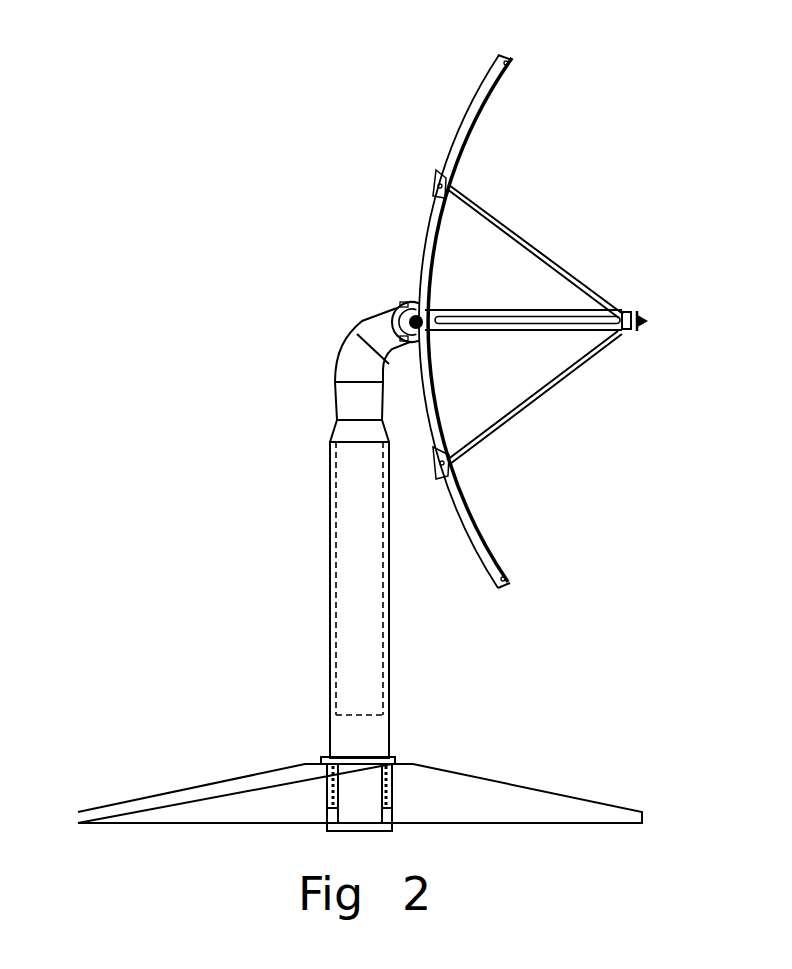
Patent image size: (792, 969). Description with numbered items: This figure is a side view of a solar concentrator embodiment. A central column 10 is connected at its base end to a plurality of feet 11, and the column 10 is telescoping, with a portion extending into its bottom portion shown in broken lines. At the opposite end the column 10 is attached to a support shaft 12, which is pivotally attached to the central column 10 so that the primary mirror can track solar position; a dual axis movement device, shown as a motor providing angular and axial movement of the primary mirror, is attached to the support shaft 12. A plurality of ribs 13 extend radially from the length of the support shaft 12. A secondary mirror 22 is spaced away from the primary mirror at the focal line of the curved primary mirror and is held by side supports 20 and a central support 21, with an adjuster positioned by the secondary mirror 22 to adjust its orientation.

The central column 10 is at (352, 553).
The feet 11 is at (262, 805).
The support shaft 12 is at (400, 300).
The ribs 13 is at (462, 138).
The side supports 20 is at (512, 220).
The central support 21 is at (552, 308).
The secondary mirror 22 is at (632, 323).